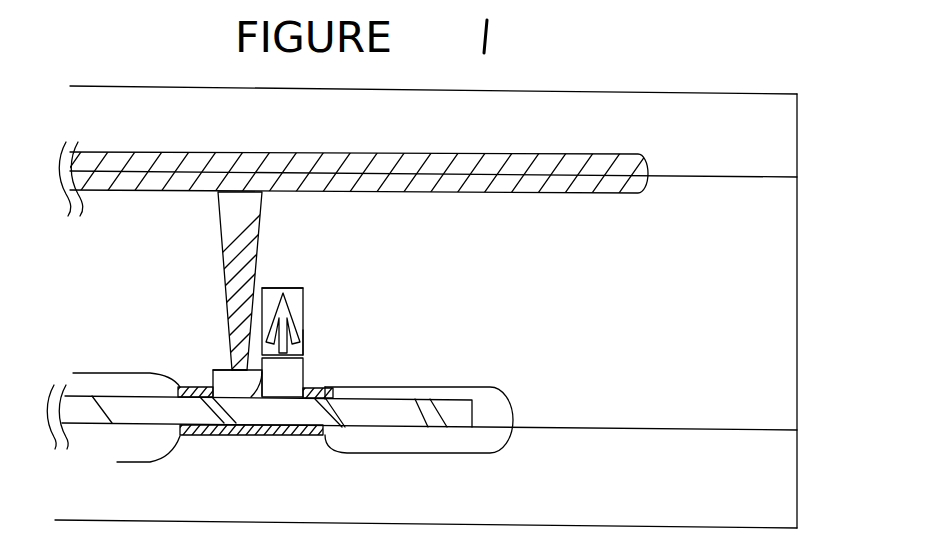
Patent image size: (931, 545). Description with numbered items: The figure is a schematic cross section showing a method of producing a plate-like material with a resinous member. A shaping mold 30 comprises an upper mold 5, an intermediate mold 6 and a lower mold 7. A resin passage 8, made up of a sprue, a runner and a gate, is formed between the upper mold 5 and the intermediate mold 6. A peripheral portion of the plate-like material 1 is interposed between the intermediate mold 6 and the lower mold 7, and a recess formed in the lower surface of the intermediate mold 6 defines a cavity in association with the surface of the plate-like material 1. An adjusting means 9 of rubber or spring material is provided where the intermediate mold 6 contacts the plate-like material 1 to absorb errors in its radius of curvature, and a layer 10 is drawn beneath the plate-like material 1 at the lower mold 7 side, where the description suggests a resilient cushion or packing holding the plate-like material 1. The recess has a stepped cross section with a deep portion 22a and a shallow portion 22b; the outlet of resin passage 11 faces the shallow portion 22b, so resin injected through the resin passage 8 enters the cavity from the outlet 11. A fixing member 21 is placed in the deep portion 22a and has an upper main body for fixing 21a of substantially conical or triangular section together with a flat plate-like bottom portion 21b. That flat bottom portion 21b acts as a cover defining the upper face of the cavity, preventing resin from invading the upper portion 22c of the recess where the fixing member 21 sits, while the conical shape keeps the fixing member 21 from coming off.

The plate-like material 1 is at (128, 408).
The upper mold 5 is at (765, 139).
The intermediate mold 6 is at (762, 266).
The lower mold 7 is at (760, 478).
The resin passage 8 is at (235, 213).
The adjusting means 9 is at (188, 388).
The bottom conductive layer 10 is at (296, 436).
The outlet of resin passage 11 is at (218, 366).
The fixing member 21 is at (270, 293).
The main body for fixing 21a is at (303, 325).
The bottom portion 21b is at (303, 345).
The deep portion 22a is at (232, 398).
The shallow portion 22b is at (212, 377).
The upper portion of the recess 22c is at (303, 290).
The shaping mold 30 is at (797, 338).